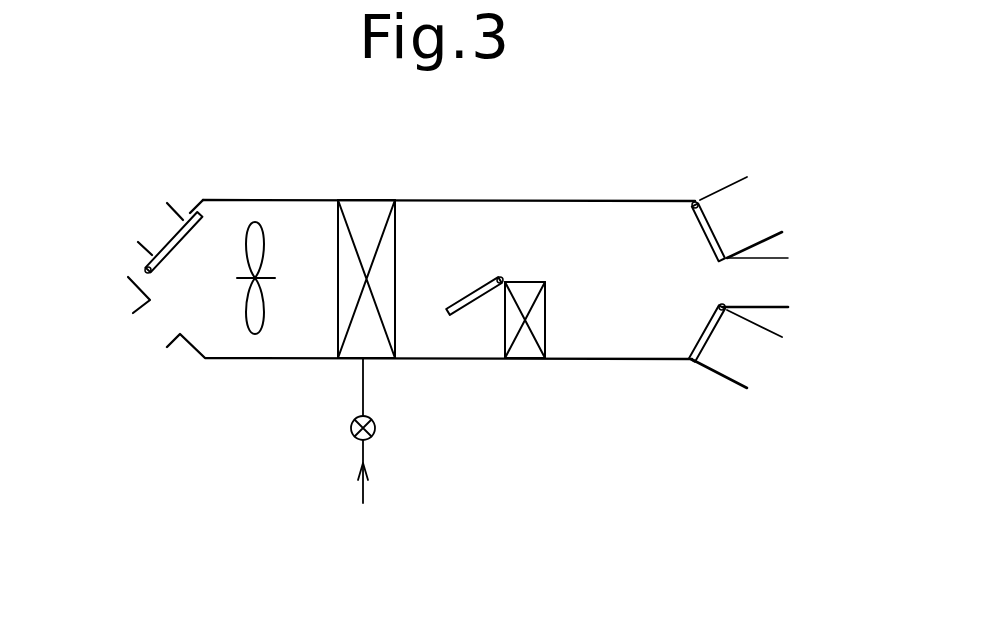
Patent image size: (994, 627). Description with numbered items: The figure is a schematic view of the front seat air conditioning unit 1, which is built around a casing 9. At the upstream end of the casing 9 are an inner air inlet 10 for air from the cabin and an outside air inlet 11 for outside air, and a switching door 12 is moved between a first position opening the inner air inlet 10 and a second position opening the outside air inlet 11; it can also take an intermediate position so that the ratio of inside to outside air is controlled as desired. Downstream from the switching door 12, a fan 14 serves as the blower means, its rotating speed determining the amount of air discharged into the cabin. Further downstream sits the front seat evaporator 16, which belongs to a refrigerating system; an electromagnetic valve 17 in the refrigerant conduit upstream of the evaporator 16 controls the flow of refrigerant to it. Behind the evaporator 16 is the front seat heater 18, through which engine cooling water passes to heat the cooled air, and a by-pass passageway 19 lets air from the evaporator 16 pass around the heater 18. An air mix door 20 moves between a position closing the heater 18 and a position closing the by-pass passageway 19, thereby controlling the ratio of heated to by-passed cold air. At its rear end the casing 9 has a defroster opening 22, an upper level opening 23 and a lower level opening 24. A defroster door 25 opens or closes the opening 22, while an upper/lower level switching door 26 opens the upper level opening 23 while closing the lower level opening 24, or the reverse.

The front seat air conditioning unit 1 is at (160, 184).
The casing 9 is at (470, 207).
The inner air inlet 10 is at (155, 233).
The outside air inlet 11 is at (155, 322).
The switching door 12 is at (187, 237).
The fan 14 is at (263, 237).
The front seat evaporator 16 is at (373, 208).
The electromagnetic valve 17 is at (353, 423).
The front seat heater 18 is at (543, 327).
The by-pass passageway 19 is at (545, 227).
The air mix door 20 is at (467, 317).
The defroster opening 22 is at (740, 218).
The upper level opening 23 is at (768, 290).
The lower level opening 24 is at (748, 352).
The defroster door 25 is at (700, 233).
The upper/lower level switching door 26 is at (700, 330).